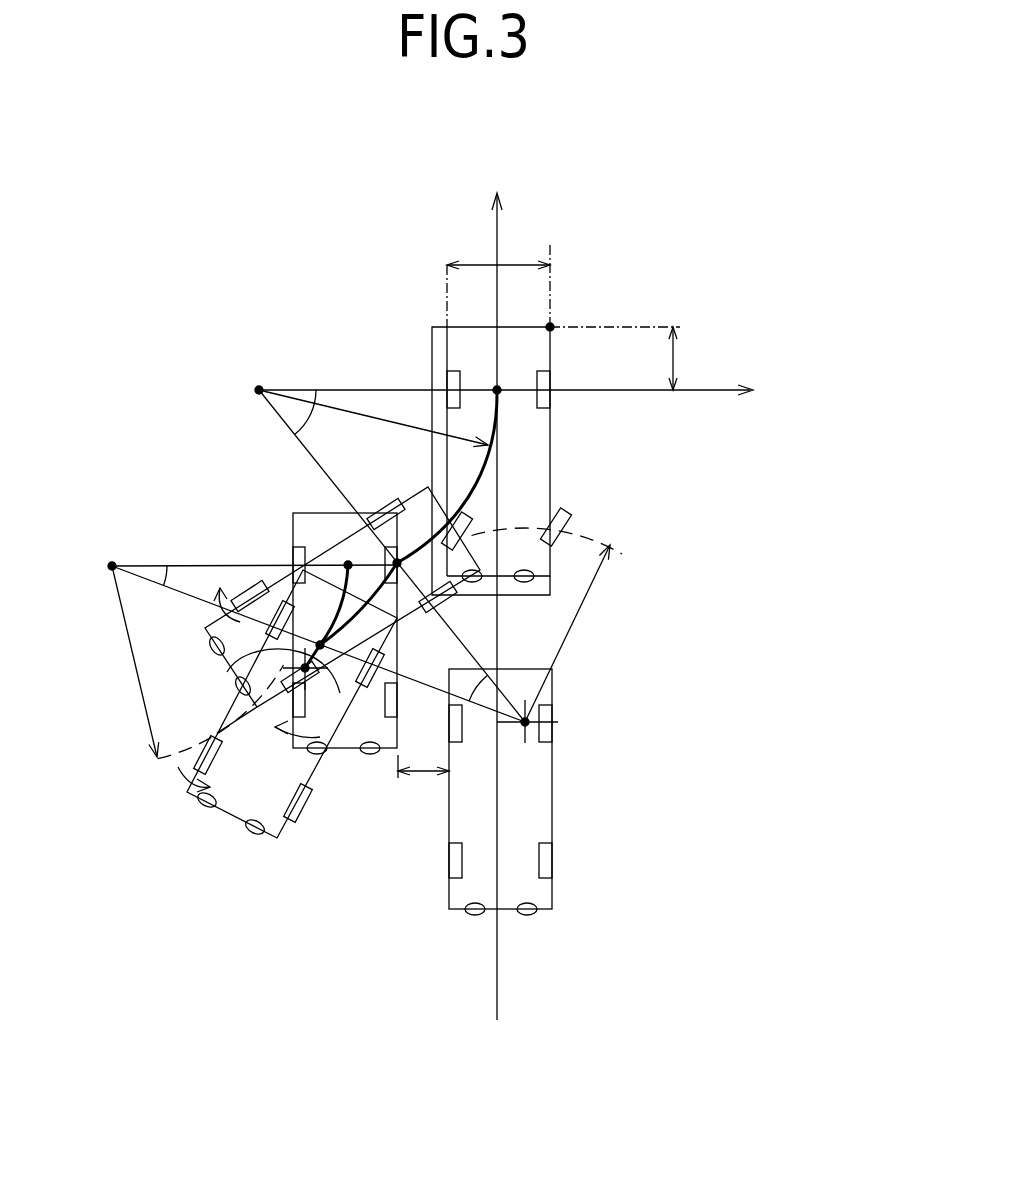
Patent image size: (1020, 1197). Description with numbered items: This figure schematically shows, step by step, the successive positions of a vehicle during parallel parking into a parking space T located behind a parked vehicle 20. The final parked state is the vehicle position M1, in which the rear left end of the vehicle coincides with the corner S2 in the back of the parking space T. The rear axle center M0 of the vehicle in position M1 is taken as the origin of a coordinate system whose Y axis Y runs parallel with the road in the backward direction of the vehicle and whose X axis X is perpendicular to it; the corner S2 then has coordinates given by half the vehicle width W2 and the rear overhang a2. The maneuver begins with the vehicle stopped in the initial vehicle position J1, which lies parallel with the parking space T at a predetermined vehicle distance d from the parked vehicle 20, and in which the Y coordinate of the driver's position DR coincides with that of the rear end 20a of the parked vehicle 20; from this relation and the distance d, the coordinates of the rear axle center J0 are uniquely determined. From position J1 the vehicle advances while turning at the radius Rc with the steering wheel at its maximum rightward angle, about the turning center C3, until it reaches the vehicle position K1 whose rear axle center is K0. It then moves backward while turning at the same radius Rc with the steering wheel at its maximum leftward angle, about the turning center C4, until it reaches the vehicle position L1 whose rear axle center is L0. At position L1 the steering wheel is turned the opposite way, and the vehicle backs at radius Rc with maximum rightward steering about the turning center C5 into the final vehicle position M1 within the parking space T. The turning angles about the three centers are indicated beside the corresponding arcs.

The parked vehicle 20 is at (553, 812).
The rear end of the parked vehicle 20a is at (540, 668).
The turning center C3 is at (112, 565).
The turning center C4 is at (527, 724).
The turning center C5 is at (258, 388).
The rear axle center M0 is at (498, 388).
The vehicle position M1 is at (553, 430).
The rear axle center L0 is at (395, 562).
The vehicle position L1 is at (300, 543).
The rear axle center J0 is at (348, 566).
The vehicle position J1 is at (383, 757).
The rear axle center K0 is at (308, 684).
The vehicle position K1 is at (264, 840).
The position of the driver DR is at (234, 672).
The corner in the back of the parking space S2 is at (551, 326).
The vehicle width W2 is at (522, 263).
The parking space T is at (440, 326).
The rear overhang a2 is at (676, 358).
The vehicle distance d is at (423, 756).
The turning radius Rc is at (397, 426).
The X axis X is at (506, 406).
The Y axis Y is at (476, 599).